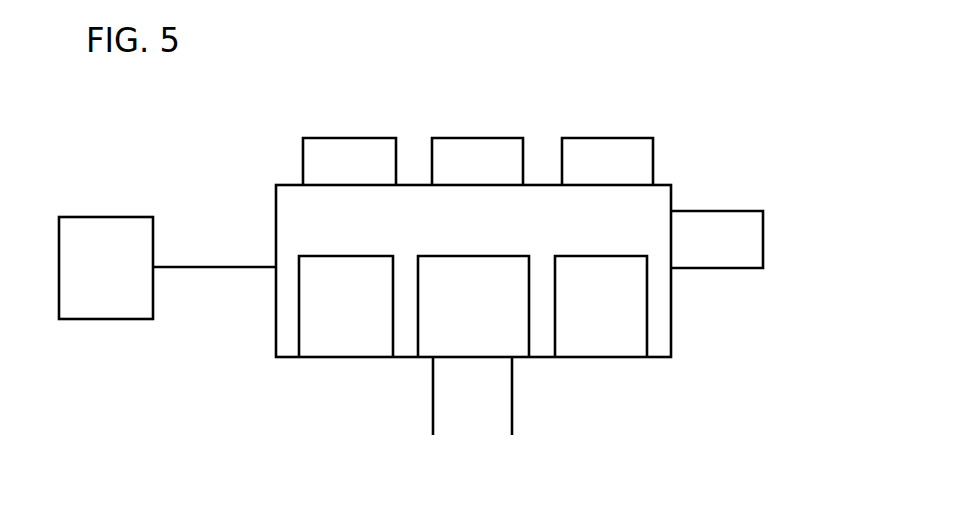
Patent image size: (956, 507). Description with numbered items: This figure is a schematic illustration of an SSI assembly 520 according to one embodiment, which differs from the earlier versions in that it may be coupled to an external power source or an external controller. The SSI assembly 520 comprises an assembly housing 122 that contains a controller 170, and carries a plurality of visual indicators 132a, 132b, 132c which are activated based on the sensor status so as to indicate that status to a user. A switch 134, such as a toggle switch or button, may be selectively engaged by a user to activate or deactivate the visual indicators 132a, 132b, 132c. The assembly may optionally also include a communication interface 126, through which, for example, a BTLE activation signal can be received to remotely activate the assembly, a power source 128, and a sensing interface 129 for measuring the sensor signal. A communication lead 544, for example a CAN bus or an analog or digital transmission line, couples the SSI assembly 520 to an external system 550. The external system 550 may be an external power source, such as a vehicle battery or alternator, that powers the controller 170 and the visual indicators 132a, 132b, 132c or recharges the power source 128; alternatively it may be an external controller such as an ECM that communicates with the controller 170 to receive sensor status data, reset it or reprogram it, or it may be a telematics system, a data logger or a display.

The SSI assembly 520 is at (718, 115).
The assembly housing 122 is at (275, 319).
The visual indicator 132a is at (349, 149).
The visual indicator 132b is at (464, 149).
The visual indicator 132c is at (593, 150).
The switch 134 is at (757, 236).
The external system 550 is at (104, 225).
The communication lead 544 is at (202, 265).
The controller 170 is at (343, 354).
The communication interface 126 is at (480, 354).
The power source 128 is at (611, 354).
The sensing interface 129 is at (431, 392).